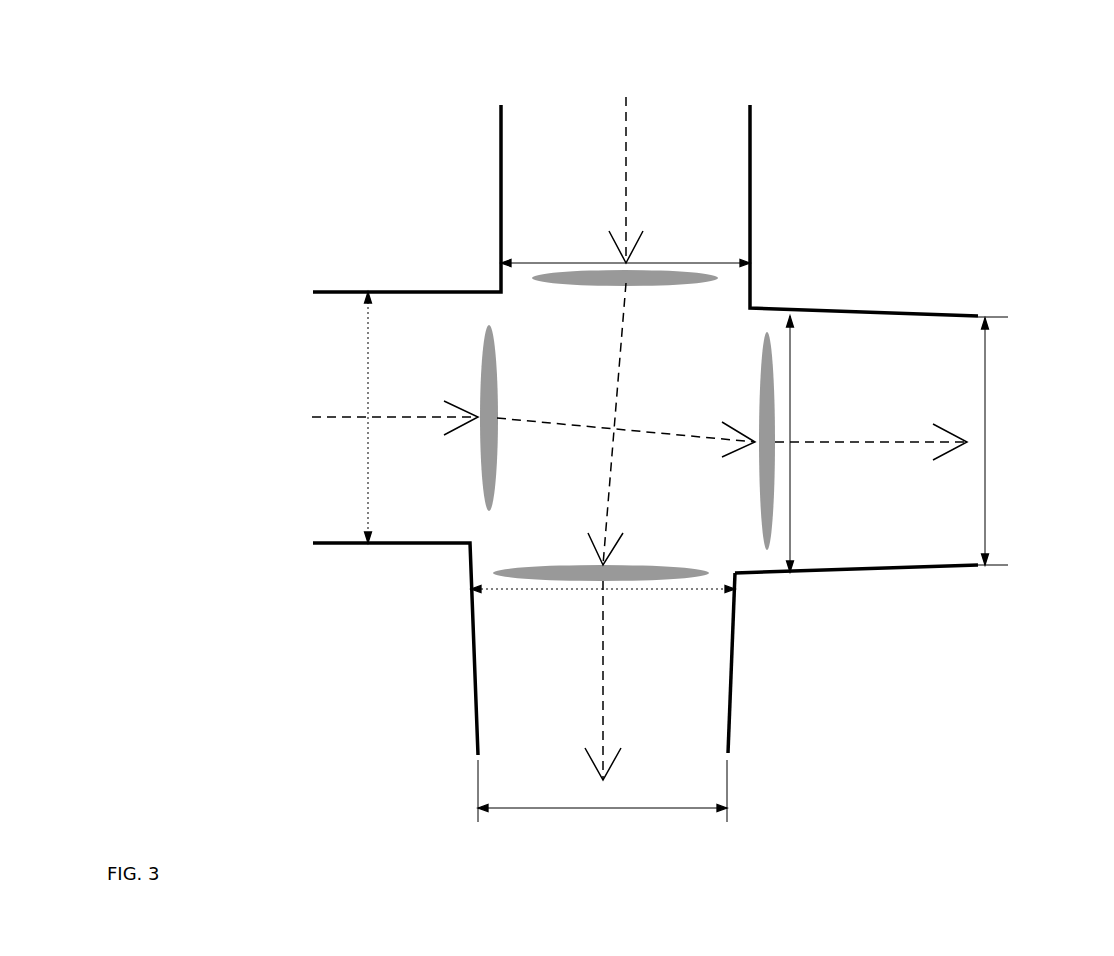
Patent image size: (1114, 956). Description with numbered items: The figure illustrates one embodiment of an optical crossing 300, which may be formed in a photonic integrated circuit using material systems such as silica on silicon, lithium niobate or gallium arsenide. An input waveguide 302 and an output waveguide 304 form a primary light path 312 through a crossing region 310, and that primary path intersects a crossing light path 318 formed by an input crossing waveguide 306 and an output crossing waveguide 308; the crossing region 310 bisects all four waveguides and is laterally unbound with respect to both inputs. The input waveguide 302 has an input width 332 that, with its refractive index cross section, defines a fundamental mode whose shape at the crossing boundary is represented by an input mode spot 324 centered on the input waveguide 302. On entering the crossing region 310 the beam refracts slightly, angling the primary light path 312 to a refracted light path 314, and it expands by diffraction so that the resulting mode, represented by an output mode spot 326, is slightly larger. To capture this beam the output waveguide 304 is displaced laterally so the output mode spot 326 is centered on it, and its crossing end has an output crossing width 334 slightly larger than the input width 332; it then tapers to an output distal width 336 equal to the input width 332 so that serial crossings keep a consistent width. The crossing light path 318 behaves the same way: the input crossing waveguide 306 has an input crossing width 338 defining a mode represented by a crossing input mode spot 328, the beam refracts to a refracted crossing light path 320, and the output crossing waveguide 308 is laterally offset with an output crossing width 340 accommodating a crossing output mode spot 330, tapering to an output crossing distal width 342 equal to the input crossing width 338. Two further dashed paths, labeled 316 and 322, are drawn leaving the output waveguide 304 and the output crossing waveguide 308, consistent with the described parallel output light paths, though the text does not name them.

The optical crossing 300 is at (256, 101).
The input waveguide 302 is at (313, 308).
The output waveguide 304 is at (1008, 340).
The input crossing waveguide 306 is at (555, 118).
The output crossing waveguide 308 is at (502, 730).
The crossing region 310 is at (752, 308).
The primary light path 312 is at (312, 417).
The refracted light path 314 is at (704, 437).
The first output beam 316 is at (905, 442).
The crossing light path 318 is at (627, 183).
The refracted crossing light path 320 is at (608, 510).
The second output beam 322 is at (603, 712).
The input mode spot 324 is at (489, 325).
The output mode spot 326 is at (772, 519).
The crossing input mode spot 328 is at (560, 270).
The crossing output mode spot 330 is at (493, 573).
The input width 332 is at (368, 370).
The output crossing width 334 is at (790, 385).
The output distal width 336 is at (985, 465).
The input crossing width 338 is at (667, 260).
The output crossing width 340 is at (517, 590).
The output crossing distal width 342 is at (625, 808).